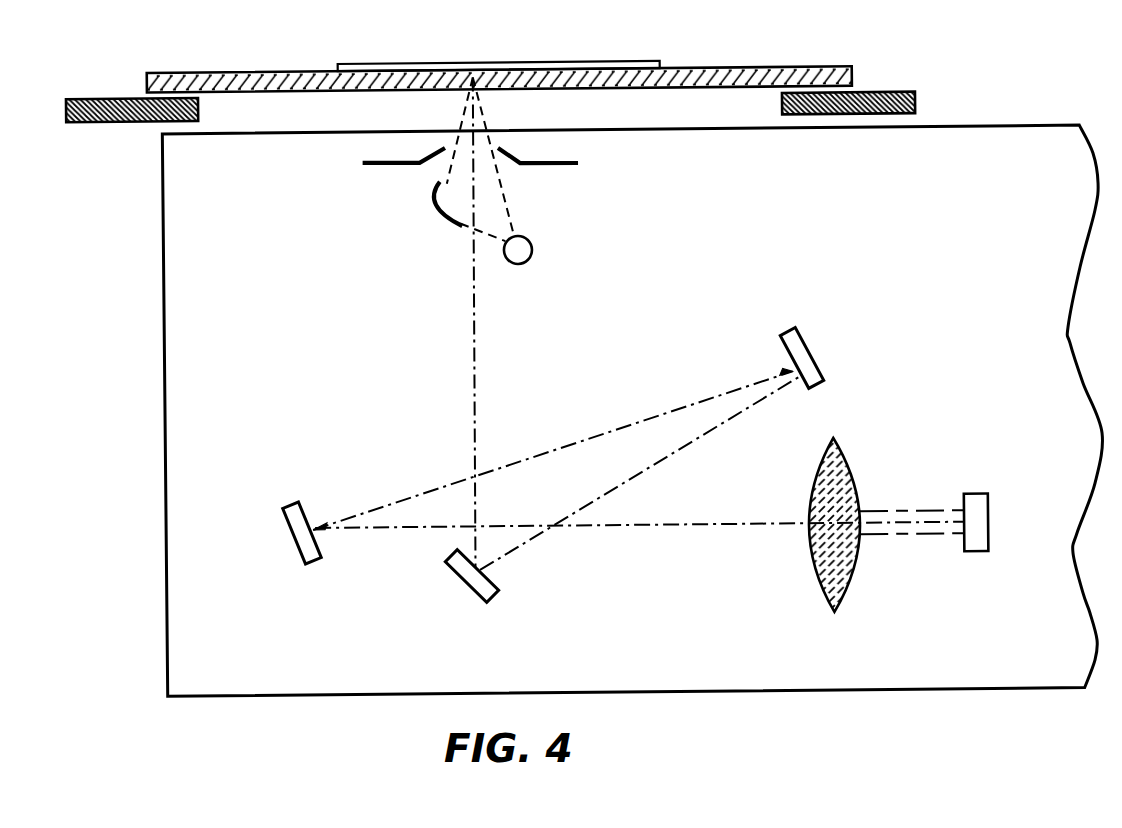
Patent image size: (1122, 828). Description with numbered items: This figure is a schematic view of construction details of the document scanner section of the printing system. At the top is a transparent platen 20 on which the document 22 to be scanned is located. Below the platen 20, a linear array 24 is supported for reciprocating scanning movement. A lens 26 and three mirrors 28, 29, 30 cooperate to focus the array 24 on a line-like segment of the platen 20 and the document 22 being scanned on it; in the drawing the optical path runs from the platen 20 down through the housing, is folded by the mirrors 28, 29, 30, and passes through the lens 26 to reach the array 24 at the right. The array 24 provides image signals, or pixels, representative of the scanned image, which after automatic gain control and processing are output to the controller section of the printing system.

The transparent platen 20 is at (266, 88).
The document 22 is at (556, 60).
The linear array 24 is at (966, 497).
The lens 26 is at (852, 585).
The mirror 28 is at (466, 591).
The mirror 29 is at (810, 357).
The mirror 30 is at (293, 545).